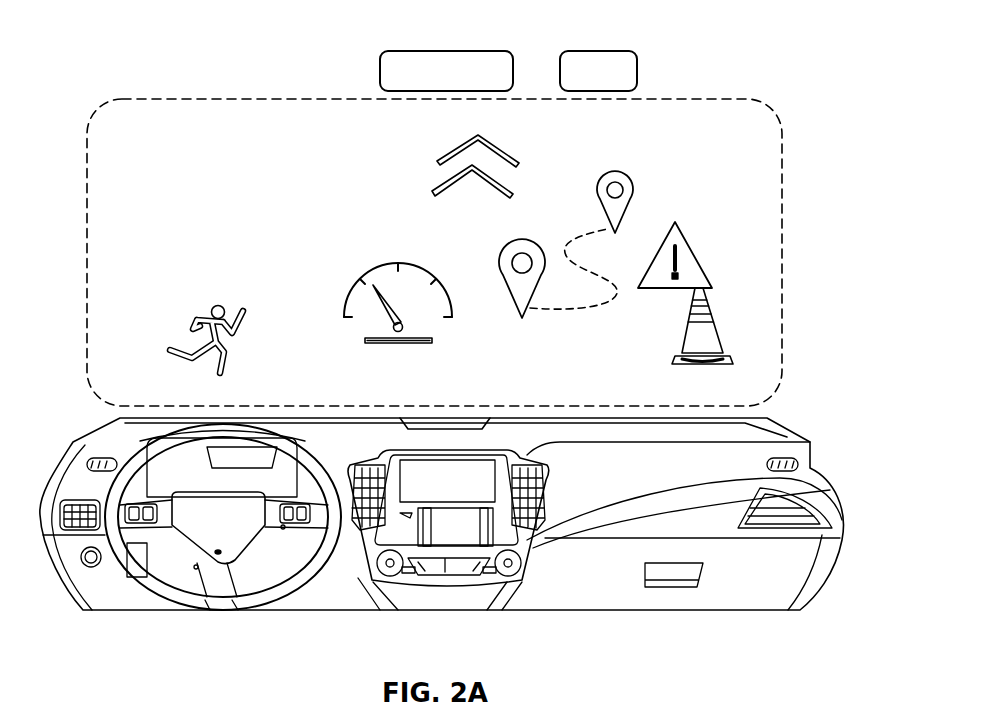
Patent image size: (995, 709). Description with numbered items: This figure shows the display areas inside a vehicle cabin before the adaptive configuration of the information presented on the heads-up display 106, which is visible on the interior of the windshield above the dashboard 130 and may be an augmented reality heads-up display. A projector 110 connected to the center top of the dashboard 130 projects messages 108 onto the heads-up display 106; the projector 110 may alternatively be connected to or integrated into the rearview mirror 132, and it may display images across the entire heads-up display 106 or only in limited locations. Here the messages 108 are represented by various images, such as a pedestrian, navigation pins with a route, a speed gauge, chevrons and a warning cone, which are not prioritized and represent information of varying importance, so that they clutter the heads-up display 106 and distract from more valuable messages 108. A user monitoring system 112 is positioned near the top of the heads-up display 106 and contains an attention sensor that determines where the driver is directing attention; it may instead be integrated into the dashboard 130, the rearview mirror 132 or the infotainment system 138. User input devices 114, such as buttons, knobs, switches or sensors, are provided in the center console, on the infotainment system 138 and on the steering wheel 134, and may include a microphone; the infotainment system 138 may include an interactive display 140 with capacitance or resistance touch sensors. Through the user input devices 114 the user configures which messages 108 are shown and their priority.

The heads-up display 106 is at (782, 244).
The messages 108 is at (205, 312).
The projector 110 is at (443, 422).
The user monitoring system 112 is at (600, 61).
The user input devices 114 is at (196, 567).
The dashboard 130 is at (347, 428).
The rearview mirror 132 is at (445, 61).
The steering wheel 134 is at (137, 580).
The infotainment system 138 is at (505, 450).
The interactive display 140 is at (473, 472).